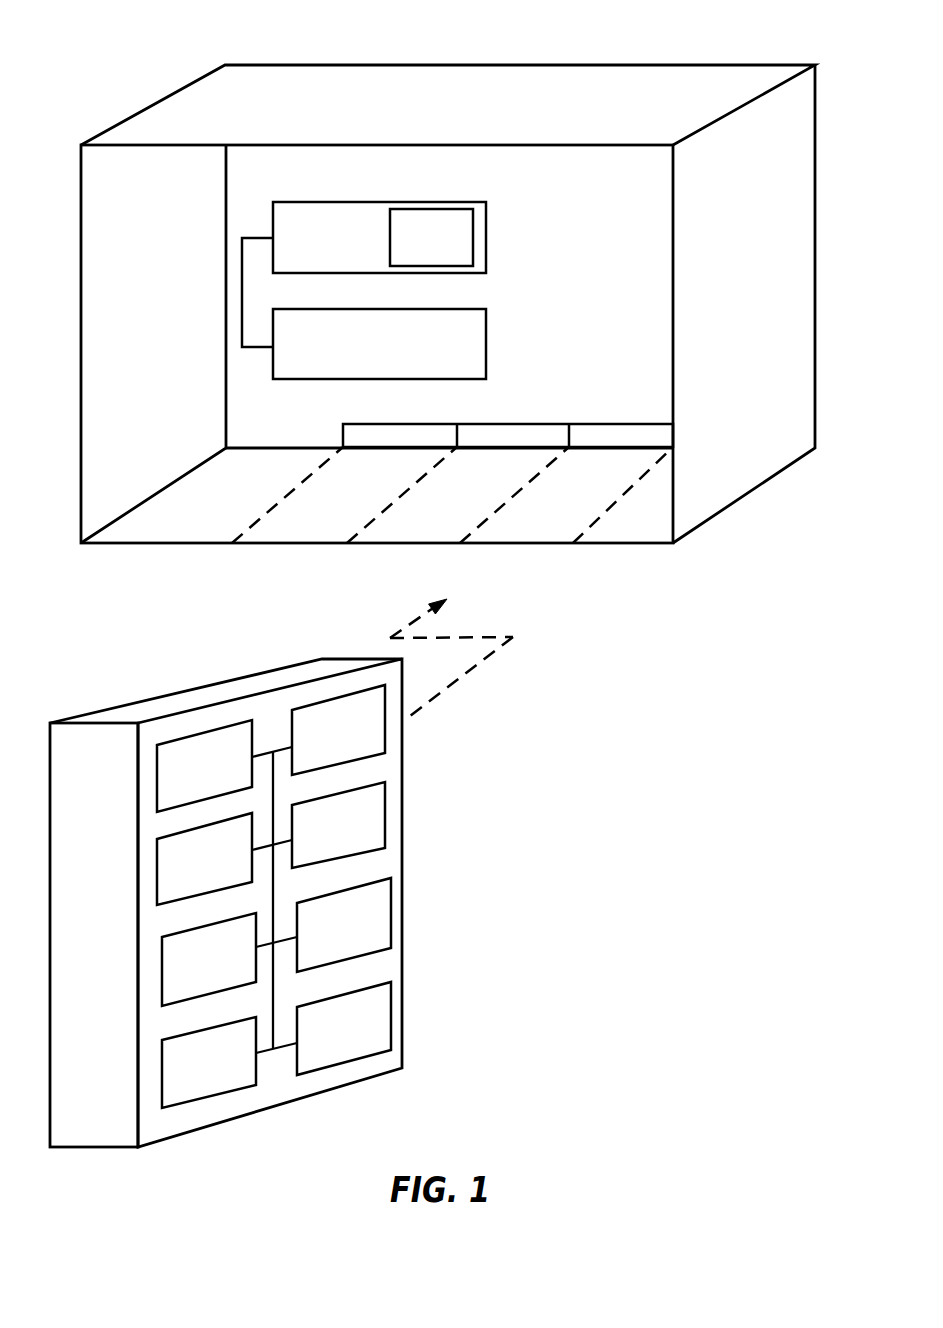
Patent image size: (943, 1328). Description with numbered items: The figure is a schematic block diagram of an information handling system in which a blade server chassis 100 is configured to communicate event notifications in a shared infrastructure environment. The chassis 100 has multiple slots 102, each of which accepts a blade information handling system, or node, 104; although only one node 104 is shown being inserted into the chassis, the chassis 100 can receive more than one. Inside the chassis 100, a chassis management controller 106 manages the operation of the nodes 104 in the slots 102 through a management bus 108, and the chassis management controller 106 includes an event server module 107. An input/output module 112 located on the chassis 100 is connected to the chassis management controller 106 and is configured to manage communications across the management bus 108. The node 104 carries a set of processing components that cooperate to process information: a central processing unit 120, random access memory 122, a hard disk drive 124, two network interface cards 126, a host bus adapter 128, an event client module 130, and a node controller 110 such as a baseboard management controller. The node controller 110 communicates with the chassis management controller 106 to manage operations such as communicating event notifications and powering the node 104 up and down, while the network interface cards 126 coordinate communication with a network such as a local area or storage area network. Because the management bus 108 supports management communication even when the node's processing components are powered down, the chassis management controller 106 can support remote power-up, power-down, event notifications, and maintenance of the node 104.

The blade server chassis 100 is at (466, 65).
The slots 102 is at (232, 545).
The blade information handling system 104 is at (402, 998).
The chassis management controller 106 is at (305, 261).
The event server module 107 is at (415, 261).
The management bus 108 is at (513, 424).
The node controller 110 is at (327, 1050).
The input/output module 112 is at (362, 367).
The central processing unit 120 is at (321, 752).
The random access memory 122 is at (192, 980).
The hard disk drive 124 is at (192, 1083).
The network interface cards 126 is at (187, 787).
The host bus adapters 128 is at (321, 847).
The event client module 130 is at (327, 946).